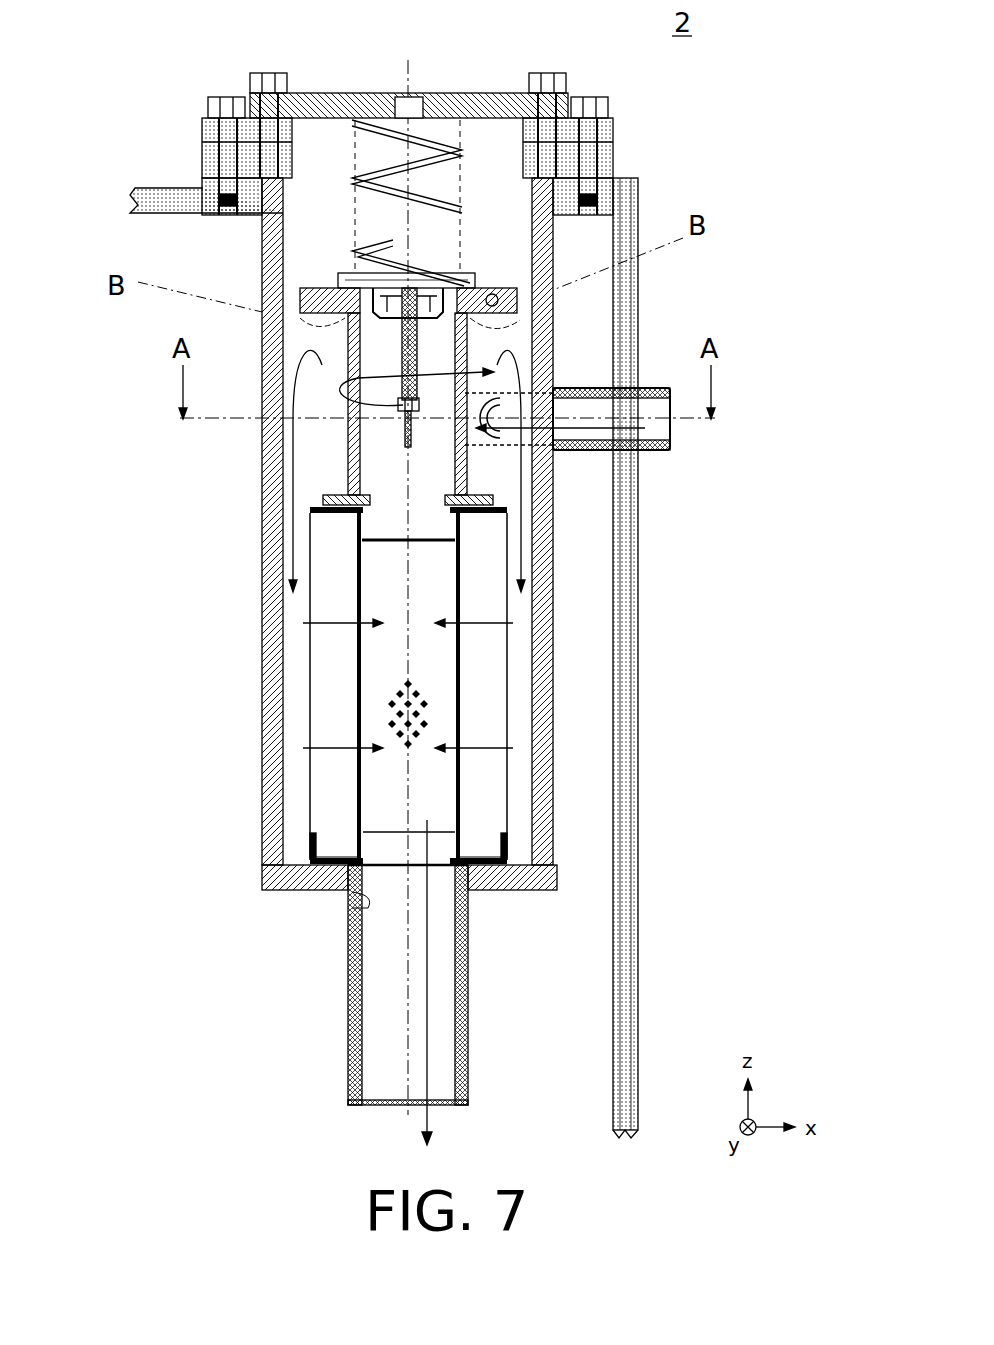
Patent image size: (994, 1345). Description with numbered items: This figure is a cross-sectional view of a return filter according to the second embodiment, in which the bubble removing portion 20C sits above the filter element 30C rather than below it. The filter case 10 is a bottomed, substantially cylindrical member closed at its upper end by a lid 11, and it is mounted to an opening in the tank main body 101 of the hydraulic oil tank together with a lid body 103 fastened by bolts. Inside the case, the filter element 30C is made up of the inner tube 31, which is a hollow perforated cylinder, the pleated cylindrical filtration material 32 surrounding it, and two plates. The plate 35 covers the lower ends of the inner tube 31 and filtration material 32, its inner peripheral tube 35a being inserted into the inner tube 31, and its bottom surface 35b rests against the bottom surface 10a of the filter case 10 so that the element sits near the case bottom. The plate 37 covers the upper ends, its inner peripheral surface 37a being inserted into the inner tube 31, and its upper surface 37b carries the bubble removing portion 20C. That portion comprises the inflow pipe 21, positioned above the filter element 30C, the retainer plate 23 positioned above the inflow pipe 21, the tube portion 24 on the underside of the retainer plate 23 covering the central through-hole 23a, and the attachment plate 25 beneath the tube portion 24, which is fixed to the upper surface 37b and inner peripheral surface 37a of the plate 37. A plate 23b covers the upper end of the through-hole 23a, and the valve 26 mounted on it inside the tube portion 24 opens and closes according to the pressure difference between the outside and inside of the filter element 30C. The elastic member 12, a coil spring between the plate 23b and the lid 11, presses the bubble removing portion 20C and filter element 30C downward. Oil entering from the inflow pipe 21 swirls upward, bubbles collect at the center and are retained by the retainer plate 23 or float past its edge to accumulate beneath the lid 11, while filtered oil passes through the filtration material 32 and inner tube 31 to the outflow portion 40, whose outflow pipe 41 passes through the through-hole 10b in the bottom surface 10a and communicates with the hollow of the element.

The filter case 10 is at (329, 545).
The bottom surface 10a is at (335, 890).
The through-hole 10b is at (352, 904).
The lid 11 is at (455, 105).
The elastic member 12 is at (363, 118).
The tank main body 101 is at (638, 186).
The lid body 103 is at (603, 132).
The bubble removing portion 20C is at (570, 452).
The inflow pipe 21 is at (545, 312).
The retainer plate 23 is at (556, 390).
The through-hole 23a is at (500, 418).
The plate 23b is at (492, 302).
The tube portion 24 is at (463, 463).
The attachment plate 25 is at (506, 515).
The valve 26 is at (407, 433).
The filter element 30C is at (278, 595).
The inner tube 31 is at (357, 670).
The filtration material 32 is at (333, 708).
The plate 35 is at (310, 845).
The inner peripheral tube 35a is at (363, 840).
The bottom surface 35b is at (300, 878).
The plate 37 is at (313, 520).
The inner peripheral surface 37a is at (378, 540).
The upper surface 37b is at (325, 497).
The outflow portion 40 is at (565, 985).
The outflow pipe 41 is at (468, 1043).